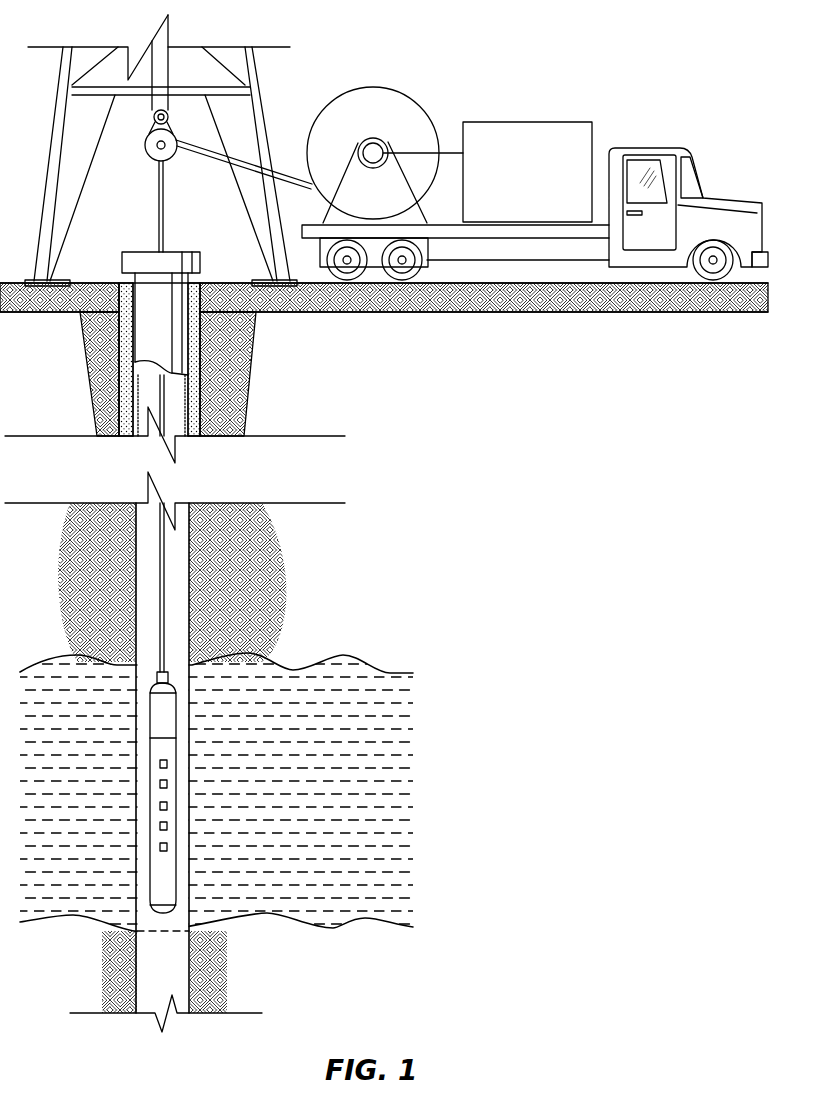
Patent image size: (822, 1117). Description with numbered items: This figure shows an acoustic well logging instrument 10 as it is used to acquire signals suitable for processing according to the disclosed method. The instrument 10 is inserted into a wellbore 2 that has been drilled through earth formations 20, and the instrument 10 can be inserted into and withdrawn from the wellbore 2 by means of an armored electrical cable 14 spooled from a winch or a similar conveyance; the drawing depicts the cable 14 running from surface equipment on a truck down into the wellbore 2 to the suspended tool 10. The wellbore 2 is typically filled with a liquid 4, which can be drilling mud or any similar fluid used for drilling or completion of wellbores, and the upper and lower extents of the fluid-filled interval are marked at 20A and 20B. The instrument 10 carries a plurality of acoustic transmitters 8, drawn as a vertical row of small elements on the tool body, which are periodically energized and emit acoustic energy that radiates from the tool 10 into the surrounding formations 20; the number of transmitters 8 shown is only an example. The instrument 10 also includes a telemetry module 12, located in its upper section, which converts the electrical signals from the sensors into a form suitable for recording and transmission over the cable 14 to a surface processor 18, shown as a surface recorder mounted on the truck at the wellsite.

The wellbore 2 is at (145, 988).
The liquid 4 is at (170, 974).
The acoustic transmitter 8 is at (158, 847).
The instrument 10 is at (174, 792).
The telemetry module 12 is at (167, 722).
The armored electrical cable 14 is at (167, 577).
The surface processor 18 is at (549, 122).
The earth formations 20 is at (337, 801).
The upper fluid boundary 20A is at (352, 658).
The lower fluid boundary 20B is at (353, 917).